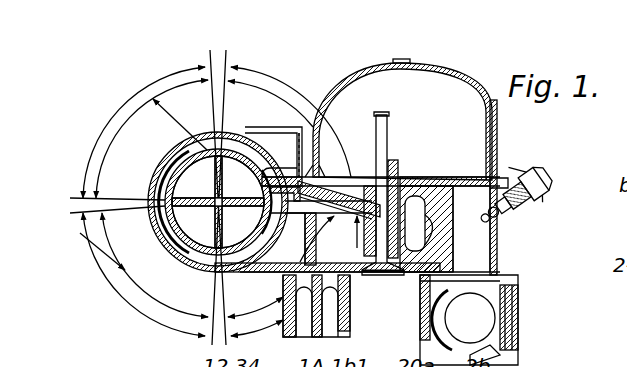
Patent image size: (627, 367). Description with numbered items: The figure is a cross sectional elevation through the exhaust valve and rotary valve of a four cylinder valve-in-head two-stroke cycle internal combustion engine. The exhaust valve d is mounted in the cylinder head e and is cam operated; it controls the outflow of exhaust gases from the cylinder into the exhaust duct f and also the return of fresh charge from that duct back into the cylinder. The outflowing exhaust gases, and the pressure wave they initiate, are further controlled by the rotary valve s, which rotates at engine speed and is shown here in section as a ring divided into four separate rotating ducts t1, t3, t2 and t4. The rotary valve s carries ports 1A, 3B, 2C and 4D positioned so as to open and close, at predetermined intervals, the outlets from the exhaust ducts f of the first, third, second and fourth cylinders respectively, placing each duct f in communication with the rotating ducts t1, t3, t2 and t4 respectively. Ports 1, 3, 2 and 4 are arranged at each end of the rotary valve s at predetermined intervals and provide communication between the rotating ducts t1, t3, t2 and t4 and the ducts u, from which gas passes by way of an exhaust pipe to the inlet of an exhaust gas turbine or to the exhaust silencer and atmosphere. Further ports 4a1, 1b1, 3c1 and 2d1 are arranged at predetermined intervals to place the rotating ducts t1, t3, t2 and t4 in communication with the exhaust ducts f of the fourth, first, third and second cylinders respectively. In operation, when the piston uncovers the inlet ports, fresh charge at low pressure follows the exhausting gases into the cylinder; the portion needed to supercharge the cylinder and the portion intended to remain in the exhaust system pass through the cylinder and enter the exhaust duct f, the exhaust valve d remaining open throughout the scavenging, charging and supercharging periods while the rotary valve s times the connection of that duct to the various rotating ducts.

The port 1 is at (268, 95).
The port 1A is at (290, 86).
The port 1b1 is at (180, 124).
The port 2 is at (145, 300).
The port 2C is at (113, 292).
The port 2d1 is at (270, 305).
The port 3 is at (128, 118).
The port 3B is at (100, 133).
The port 3c1 is at (90, 250).
The port 4 is at (296, 246).
The port 4a1 is at (262, 177).
The port 4D is at (343, 287).
The exhaust valve d is at (387, 276).
The cylinder head e is at (492, 253).
The exhaust duct f is at (328, 231).
The rotary valve s is at (188, 270).
The rotating duct t1 is at (241, 179).
The rotating duct t2 is at (195, 225).
The rotating duct t3 is at (195, 179).
The rotating duct t4 is at (241, 225).
The duct u is at (273, 152).